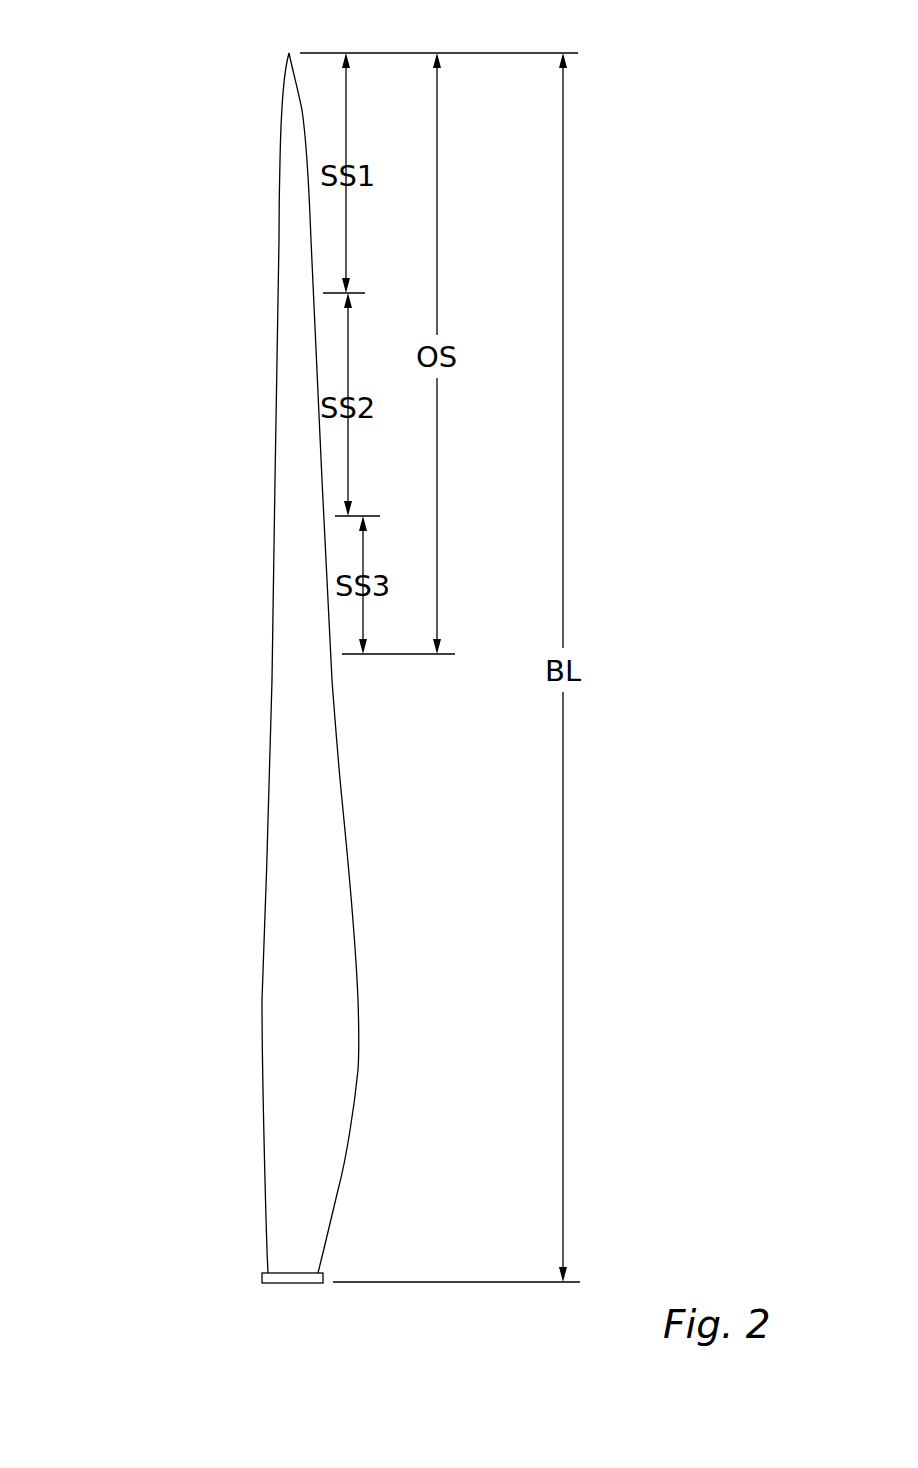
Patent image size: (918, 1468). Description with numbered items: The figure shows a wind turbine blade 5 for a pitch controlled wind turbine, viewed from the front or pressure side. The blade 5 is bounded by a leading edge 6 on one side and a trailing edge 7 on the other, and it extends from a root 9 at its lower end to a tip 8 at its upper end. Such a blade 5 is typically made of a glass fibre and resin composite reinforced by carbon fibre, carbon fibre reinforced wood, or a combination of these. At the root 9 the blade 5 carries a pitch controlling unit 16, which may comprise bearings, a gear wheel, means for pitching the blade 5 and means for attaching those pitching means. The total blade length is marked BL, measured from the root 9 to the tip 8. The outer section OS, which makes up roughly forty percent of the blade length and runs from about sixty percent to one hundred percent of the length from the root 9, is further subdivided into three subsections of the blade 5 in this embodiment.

The wind turbine blade 5 is at (256, 684).
The leading edge 6 is at (273, 620).
The trailing edge 7 is at (337, 739).
The tip 8 is at (289, 53).
The root 9 is at (293, 1284).
The pitch controlling unit 16 is at (272, 1277).